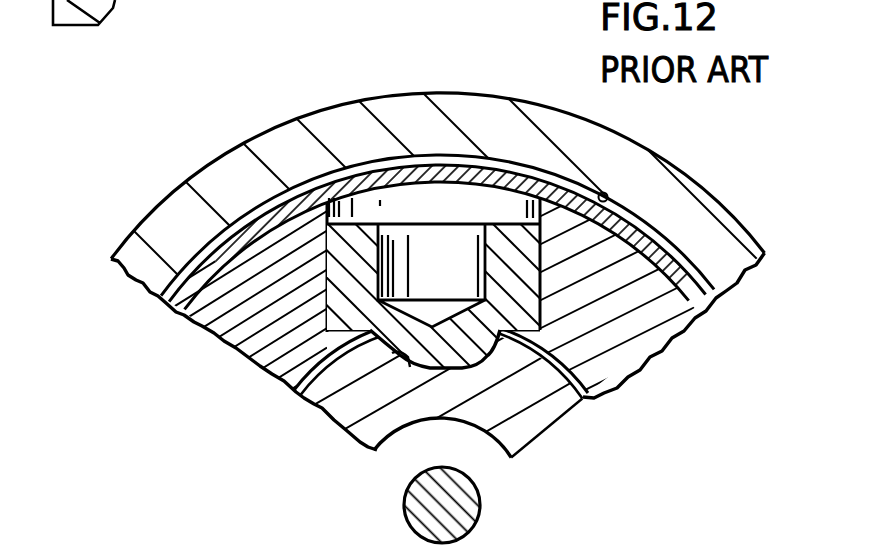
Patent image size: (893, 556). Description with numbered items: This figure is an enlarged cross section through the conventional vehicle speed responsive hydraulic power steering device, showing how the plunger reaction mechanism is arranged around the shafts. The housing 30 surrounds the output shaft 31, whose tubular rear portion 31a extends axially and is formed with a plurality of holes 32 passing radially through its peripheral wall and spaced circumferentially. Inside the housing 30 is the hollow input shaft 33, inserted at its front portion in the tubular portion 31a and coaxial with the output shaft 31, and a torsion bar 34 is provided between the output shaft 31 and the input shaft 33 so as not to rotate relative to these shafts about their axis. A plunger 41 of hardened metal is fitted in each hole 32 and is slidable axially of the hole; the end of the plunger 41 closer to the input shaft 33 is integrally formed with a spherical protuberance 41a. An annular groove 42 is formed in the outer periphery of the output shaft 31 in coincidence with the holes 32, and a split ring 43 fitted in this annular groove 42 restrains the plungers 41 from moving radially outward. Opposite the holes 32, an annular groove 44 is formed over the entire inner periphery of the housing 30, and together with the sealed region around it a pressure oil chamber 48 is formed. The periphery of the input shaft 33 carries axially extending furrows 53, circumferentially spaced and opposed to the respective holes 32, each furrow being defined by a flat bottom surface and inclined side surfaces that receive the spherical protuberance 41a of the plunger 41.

The housing 30 is at (722, 235).
The output shaft 31 is at (663, 230).
The tubular rear portion 31a is at (117, 240).
The holes 32 is at (533, 211).
The input shaft 33 is at (568, 403).
The torsion bar 34 is at (470, 513).
The plunger 41 is at (335, 255).
The spherical protuberance 41a is at (535, 405).
The annular groove 42 is at (183, 213).
The split ring 43 is at (380, 172).
The annular groove 44 is at (603, 193).
The pressure oil chamber 48 is at (458, 197).
The furrows 53 is at (383, 353).